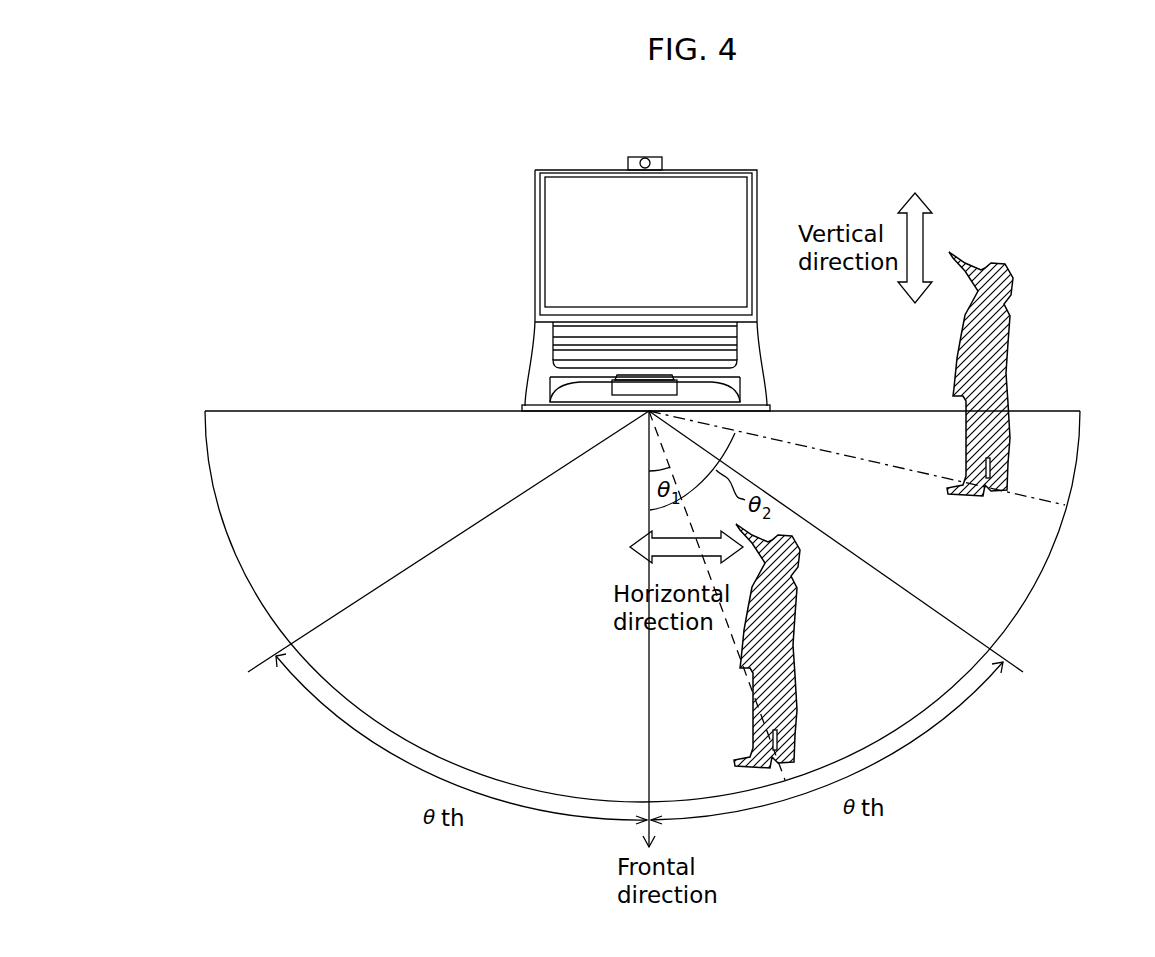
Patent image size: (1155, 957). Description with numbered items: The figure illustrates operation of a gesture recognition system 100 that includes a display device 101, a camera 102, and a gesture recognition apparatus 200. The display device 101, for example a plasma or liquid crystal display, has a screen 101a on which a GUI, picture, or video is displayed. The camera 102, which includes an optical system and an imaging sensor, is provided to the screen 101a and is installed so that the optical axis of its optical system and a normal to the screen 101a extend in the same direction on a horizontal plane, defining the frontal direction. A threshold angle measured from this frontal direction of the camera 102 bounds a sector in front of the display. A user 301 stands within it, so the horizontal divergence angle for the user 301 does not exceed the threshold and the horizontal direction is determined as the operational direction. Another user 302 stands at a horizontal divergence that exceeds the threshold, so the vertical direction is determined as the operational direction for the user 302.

The gesture recognition system 100 is at (858, 143).
The display device 101 is at (555, 168).
The screen 101a is at (705, 185).
The camera 102 is at (646, 156).
The gesture recognition apparatus 200 is at (612, 392).
The user 301 is at (797, 634).
The user 302 is at (1007, 338).